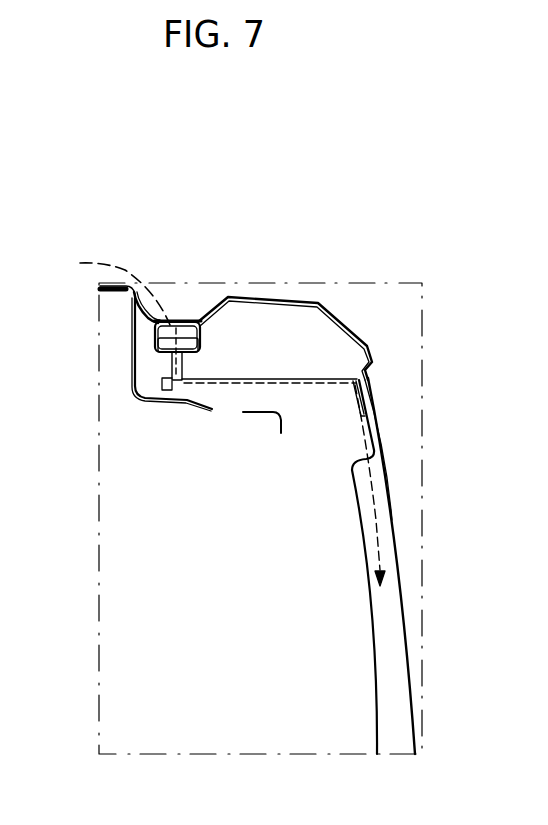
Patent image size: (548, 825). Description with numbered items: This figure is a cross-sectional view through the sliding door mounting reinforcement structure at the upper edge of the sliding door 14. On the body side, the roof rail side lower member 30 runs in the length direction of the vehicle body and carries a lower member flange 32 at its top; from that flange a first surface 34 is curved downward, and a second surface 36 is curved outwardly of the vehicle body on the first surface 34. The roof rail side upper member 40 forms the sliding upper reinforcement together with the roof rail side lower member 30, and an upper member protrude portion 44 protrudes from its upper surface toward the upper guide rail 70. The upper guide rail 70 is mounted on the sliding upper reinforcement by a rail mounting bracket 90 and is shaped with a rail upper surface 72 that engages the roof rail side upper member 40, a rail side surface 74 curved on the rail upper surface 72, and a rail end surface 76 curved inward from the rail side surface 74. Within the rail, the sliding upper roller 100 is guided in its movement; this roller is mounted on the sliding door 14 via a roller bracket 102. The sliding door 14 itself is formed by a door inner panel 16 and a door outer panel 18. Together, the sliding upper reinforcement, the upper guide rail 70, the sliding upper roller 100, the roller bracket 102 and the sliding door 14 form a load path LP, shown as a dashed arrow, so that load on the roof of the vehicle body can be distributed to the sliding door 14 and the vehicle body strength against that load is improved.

The sliding door 14 is at (405, 566).
The door inner panel 16 is at (371, 600).
The door outer panel 18 is at (403, 598).
The roof rail side lower member 30 is at (126, 375).
The lower member flange 32 is at (108, 298).
The first surface 34 is at (132, 386).
The second surface 36 is at (258, 414).
The roof rail side upper member 40 is at (295, 301).
The upper member protrude portion 44 is at (180, 320).
The upper guide rail 70 is at (179, 314).
The rail upper surface 72 is at (185, 320).
The rail side surface 74 is at (160, 349).
The rail end surface 76 is at (165, 362).
The rail mounting bracket 90 is at (200, 336).
The sliding upper roller 100 is at (197, 345).
The roller bracket 102 is at (331, 385).
The load path LP is at (386, 497).